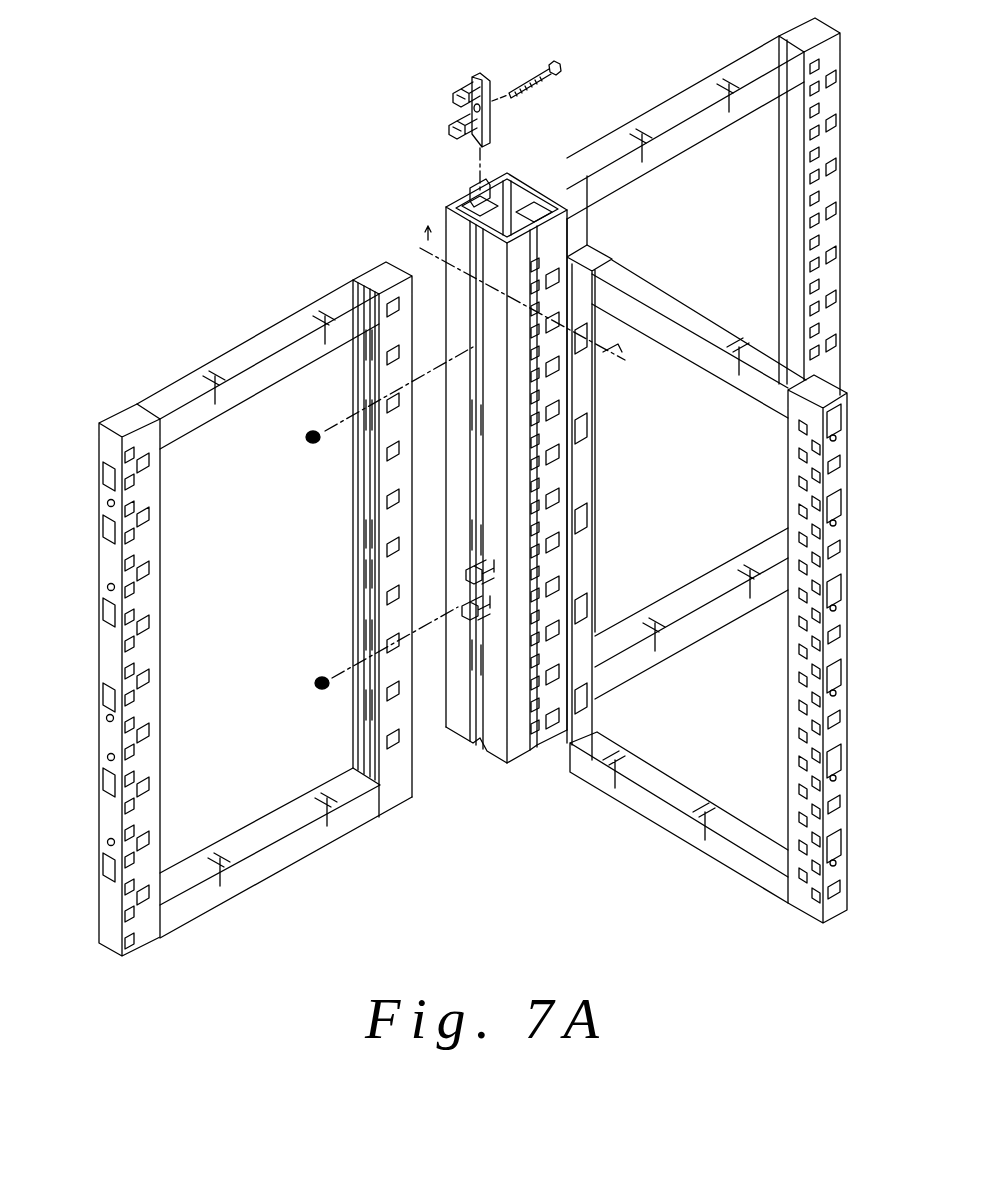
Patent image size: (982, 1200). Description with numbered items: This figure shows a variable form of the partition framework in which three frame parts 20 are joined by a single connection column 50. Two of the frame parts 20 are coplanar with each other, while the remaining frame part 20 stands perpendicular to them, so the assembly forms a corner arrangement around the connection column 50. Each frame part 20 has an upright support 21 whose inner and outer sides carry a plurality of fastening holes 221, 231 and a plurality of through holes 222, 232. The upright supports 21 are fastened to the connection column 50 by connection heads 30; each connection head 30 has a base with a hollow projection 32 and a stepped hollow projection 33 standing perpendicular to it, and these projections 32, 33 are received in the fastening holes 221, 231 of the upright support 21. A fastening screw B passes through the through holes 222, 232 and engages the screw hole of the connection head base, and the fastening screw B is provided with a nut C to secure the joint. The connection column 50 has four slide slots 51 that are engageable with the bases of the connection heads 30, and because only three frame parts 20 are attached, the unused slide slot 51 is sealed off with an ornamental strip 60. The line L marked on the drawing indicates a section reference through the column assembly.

The frame part 20 is at (267, 347).
The upright support 21 is at (125, 422).
The fastening hole 221 is at (370, 543).
The through hole 222 is at (370, 568).
The fastening hole 231 is at (102, 692).
The through hole 232 is at (108, 718).
The connection head 30 is at (488, 72).
The hollow projection 32 is at (470, 84).
The stepped hollow projection 33 is at (456, 124).
The connection column 50 is at (510, 180).
The slide slot 51 is at (473, 289).
The ornamental strip 60 is at (477, 187).
The fastening screw B is at (552, 78).
The nut C is at (312, 447).
The section line L is at (530, 282).